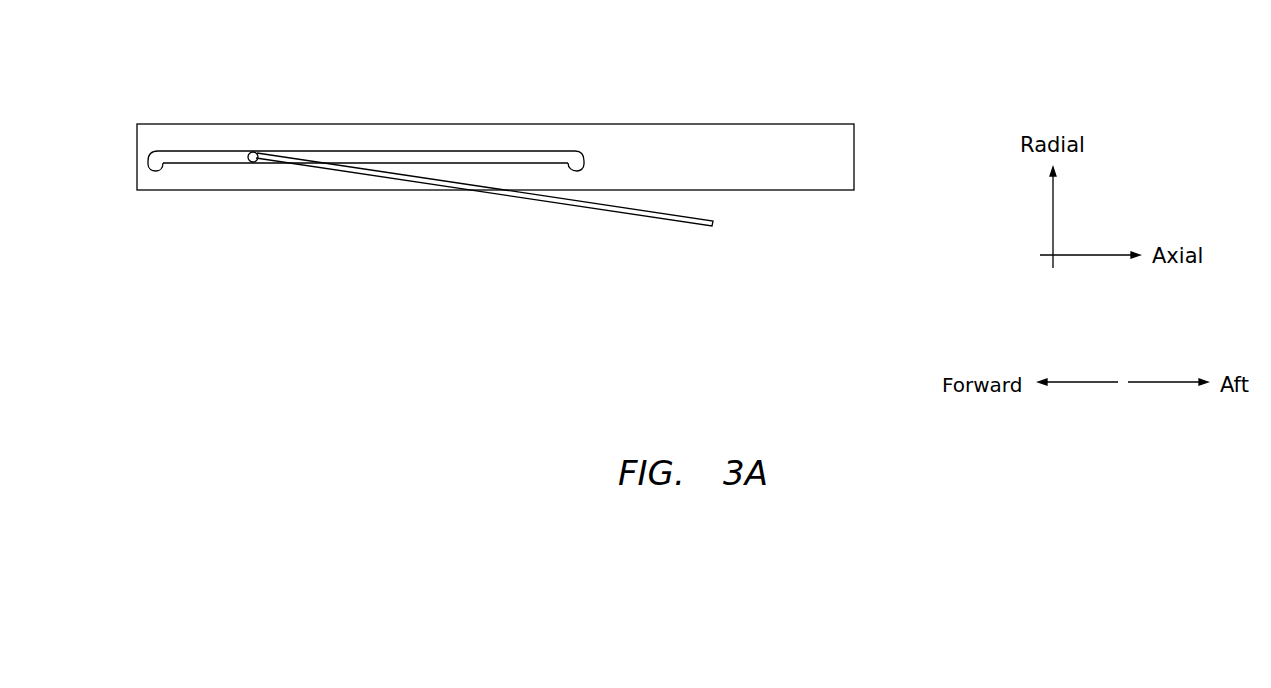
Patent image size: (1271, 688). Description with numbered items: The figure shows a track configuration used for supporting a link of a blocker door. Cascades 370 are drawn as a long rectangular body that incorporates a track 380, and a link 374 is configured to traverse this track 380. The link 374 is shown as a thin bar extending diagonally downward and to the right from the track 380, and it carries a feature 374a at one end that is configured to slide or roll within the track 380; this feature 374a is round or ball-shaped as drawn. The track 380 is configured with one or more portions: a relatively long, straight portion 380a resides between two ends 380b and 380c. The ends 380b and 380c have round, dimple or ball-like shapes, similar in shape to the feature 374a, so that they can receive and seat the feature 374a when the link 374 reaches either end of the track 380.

The cascades 370 is at (641, 124).
The track 380 is at (366, 113).
The straight portion 380a is at (459, 148).
The end 380b is at (150, 152).
The end 380c is at (582, 147).
The link 374 is at (468, 227).
The feature 374a is at (253, 163).